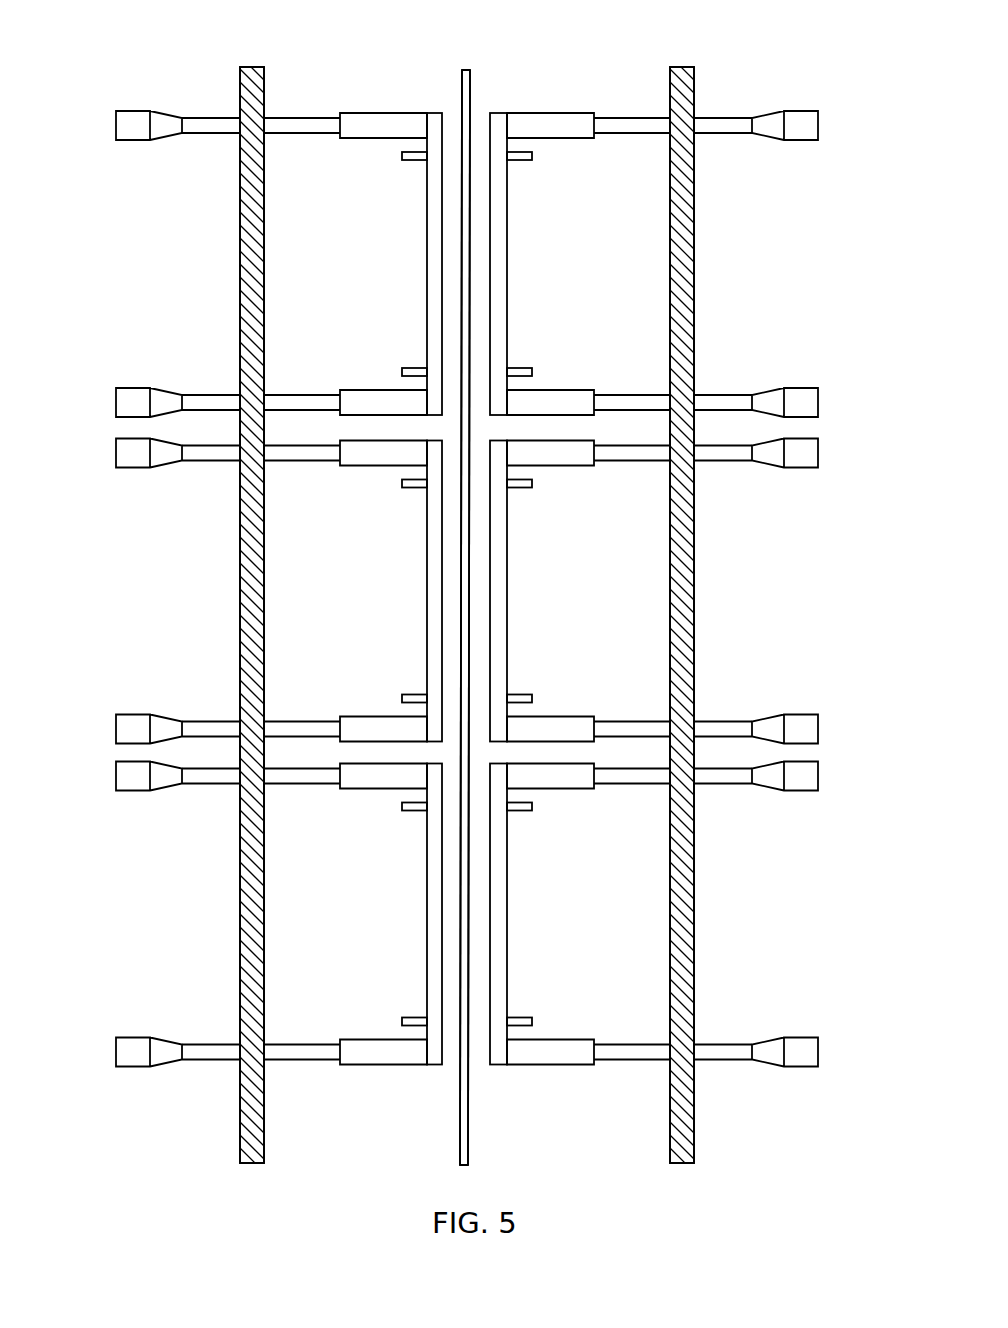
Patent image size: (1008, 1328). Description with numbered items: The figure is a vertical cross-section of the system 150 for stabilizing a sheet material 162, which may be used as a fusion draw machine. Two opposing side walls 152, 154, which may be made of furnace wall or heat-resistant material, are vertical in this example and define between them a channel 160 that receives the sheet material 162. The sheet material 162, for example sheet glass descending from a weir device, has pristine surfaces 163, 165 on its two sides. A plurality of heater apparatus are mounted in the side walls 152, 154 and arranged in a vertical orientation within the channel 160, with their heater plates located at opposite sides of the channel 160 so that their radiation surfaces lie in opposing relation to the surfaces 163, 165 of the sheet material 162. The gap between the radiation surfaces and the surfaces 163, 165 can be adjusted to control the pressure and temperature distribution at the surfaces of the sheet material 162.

The system 150 is at (252, 63).
The side wall 152 is at (240, 100).
The side wall 154 is at (695, 100).
The channel 160 is at (669, 83).
The sheet material 162 is at (467, 70).
The pristine surface 163 is at (462, 135).
The pristine surface 165 is at (472, 102).